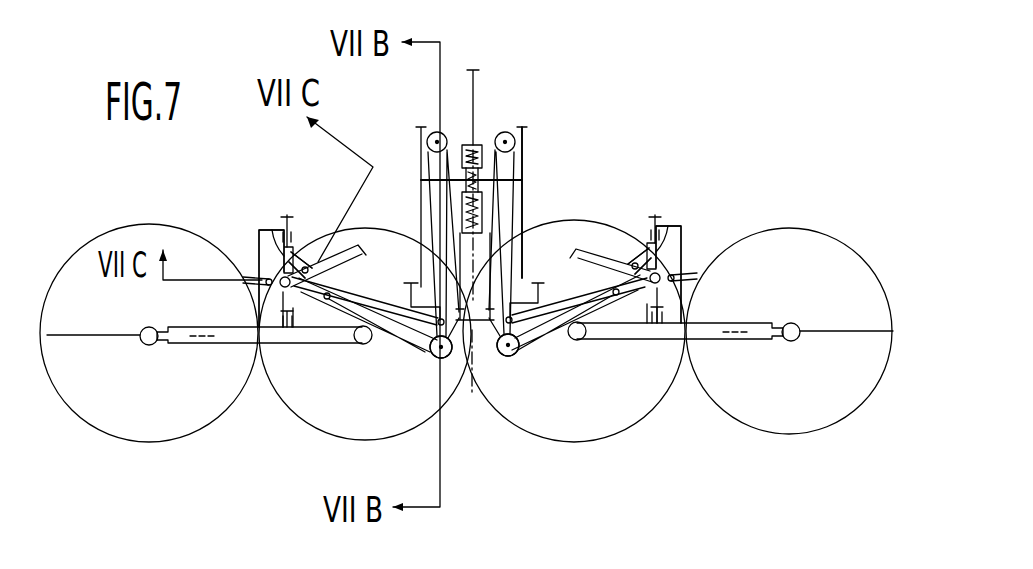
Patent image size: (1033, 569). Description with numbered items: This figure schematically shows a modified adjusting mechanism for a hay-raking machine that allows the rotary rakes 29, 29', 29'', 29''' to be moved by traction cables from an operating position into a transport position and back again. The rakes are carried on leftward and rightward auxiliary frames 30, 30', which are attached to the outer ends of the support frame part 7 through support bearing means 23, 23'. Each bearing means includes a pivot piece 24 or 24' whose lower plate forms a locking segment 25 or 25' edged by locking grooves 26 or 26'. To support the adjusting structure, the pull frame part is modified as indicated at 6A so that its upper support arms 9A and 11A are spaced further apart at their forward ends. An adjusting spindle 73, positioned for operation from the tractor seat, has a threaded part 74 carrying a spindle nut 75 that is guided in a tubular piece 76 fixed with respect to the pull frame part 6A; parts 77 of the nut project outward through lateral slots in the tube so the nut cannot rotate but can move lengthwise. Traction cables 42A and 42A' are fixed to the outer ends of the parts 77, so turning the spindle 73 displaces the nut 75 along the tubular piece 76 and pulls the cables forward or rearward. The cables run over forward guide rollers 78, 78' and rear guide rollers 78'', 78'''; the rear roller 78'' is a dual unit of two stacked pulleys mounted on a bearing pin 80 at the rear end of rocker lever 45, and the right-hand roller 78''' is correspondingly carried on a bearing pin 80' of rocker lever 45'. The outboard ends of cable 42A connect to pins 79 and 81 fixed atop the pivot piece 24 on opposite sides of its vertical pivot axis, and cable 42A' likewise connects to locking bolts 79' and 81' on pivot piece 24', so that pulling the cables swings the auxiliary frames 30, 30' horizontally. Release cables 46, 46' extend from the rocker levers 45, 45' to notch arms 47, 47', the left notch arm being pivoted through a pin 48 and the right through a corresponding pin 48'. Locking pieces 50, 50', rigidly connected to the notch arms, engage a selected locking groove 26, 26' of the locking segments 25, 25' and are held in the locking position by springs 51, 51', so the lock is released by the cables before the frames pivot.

The pull frame part 6A is at (550, 117).
The support frame part 7 is at (473, 374).
The upper support arm 9A is at (418, 130).
The upper support arm 11A is at (527, 178).
The support bearing means 23 is at (266, 220).
The support bearing means 23' is at (688, 230).
The pivot piece 24 is at (255, 251).
The pivot piece 24' is at (715, 273).
The locking segment 25 is at (288, 352).
The locking segment 25' is at (674, 366).
The locking grooves 26 is at (309, 208).
The locking groove 26' is at (652, 219).
The rotary rake 29 is at (149, 349).
The rotary rake 29' is at (365, 351).
The rotary rake 29'' is at (574, 350).
The rotary rake 29''' is at (789, 354).
The auxiliary frame 30 is at (228, 300).
The auxiliary frame 30' is at (707, 296).
The traction cable 42A is at (451, 161).
The traction cable 42A' is at (502, 179).
The rocker arm 45 is at (368, 333).
The rocker arm 45' is at (576, 331).
The release cable 46 is at (368, 287).
The release cable 46' is at (576, 273).
The notch arm 47 is at (340, 257).
The notch arm 47' is at (611, 231).
The pin 48 is at (334, 343).
The right pin 48' is at (598, 342).
The locking piece 50 is at (331, 231).
The locking piece 50' is at (631, 219).
The spring 51 is at (312, 228).
The spring 51' is at (641, 329).
The adjusting spindle 73 is at (477, 73).
The threaded part 74 is at (462, 208).
The spindle nut 75 is at (482, 145).
The tubular piece 76 is at (462, 150).
The parts of the spindle nut 77 is at (526, 148).
The forward guide roller 78 is at (427, 203).
The guide roller 78' is at (529, 201).
The rear guide roller 78'' is at (453, 400).
The guide roller 78''' is at (505, 399).
The locking pin 79 is at (237, 248).
The locking bolt 79' is at (717, 272).
The bearing pin 80 is at (425, 377).
The pulley bracket 80' is at (519, 374).
The locking bolt 81 is at (288, 208).
The locking bolt 81' is at (687, 219).